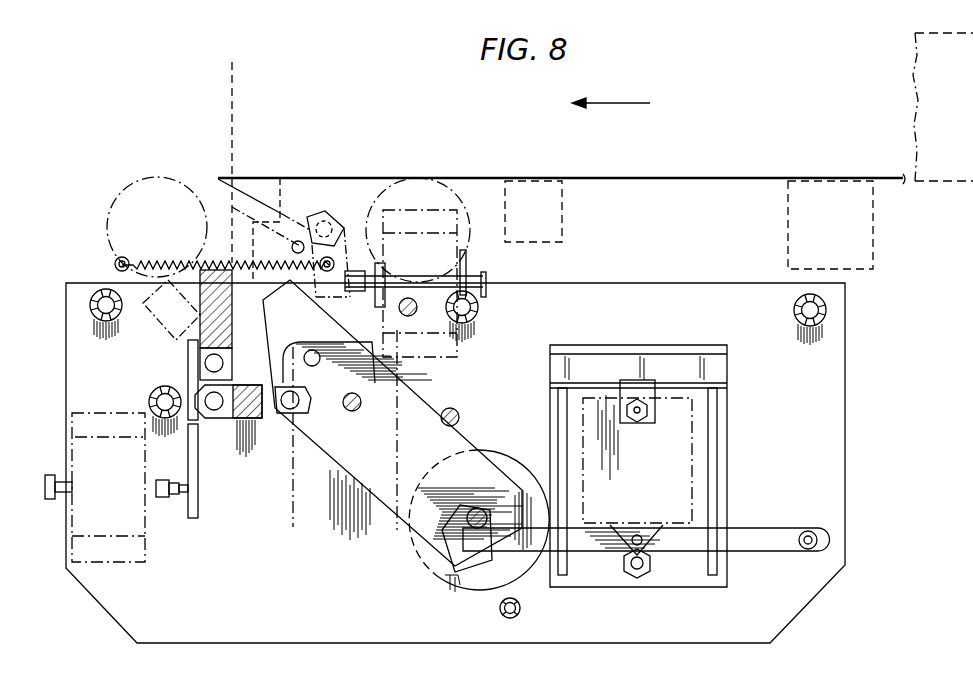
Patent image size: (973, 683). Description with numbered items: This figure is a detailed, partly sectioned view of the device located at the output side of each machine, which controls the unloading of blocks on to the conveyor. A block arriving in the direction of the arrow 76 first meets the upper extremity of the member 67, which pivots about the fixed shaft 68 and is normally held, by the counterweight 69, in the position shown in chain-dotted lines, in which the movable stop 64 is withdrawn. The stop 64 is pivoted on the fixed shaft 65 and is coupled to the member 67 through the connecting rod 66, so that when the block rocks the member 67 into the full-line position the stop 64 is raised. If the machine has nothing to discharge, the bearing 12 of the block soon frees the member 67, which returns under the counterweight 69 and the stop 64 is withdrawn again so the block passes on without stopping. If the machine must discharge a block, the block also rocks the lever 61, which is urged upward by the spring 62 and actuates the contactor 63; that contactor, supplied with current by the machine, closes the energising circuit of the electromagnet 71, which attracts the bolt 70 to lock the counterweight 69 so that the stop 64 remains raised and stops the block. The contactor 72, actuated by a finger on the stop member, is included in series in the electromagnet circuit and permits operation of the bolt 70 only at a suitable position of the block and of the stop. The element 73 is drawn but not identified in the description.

The bearing 12 is at (244, 240).
The lever 61 is at (270, 200).
The spring 62 is at (186, 231).
The contactor 63 is at (455, 289).
The movable stop 64 is at (200, 338).
The fixed shaft 65 is at (203, 372).
The connecting rod 66 is at (238, 427).
The member 67 is at (347, 455).
The fixed shaft 68 is at (349, 410).
The counterweight 69 is at (510, 464).
The bolt 70 is at (492, 545).
The electromagnet 71 is at (702, 455).
The contactor 72 is at (128, 508).
The adjusting screw 73 is at (196, 480).
The arrow 76 is at (611, 94).